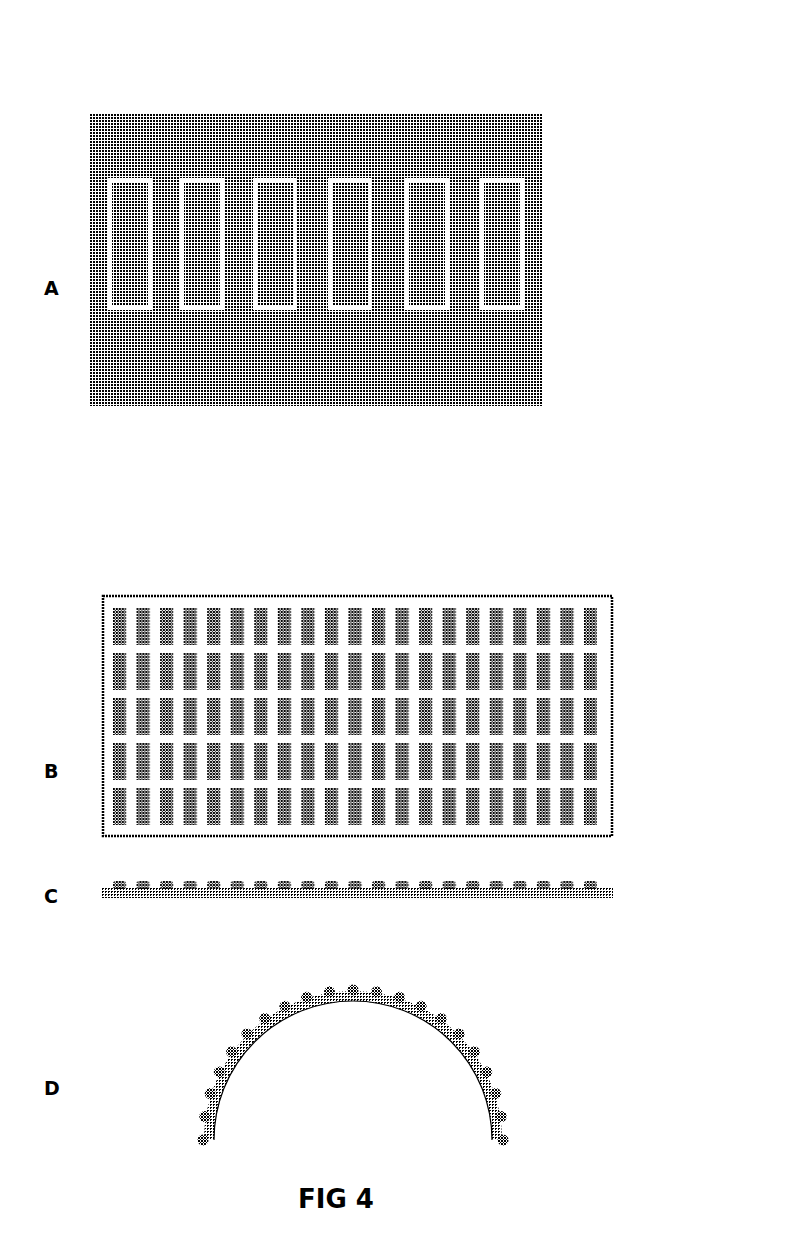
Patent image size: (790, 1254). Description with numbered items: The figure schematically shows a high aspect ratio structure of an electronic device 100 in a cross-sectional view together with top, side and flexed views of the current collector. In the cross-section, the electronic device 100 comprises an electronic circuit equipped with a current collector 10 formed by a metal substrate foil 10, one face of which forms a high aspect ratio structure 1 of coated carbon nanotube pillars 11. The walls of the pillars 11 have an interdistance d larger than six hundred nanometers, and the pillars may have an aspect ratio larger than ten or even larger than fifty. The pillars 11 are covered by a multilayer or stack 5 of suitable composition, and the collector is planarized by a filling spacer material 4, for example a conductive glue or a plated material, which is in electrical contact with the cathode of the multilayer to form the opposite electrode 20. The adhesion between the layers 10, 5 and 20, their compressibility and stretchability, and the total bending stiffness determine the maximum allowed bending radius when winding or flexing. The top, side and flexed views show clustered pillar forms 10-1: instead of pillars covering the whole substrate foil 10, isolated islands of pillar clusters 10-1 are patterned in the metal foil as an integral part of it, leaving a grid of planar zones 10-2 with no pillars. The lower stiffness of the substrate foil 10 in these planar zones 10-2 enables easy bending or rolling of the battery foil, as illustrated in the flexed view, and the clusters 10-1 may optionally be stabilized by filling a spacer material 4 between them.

The opposite electrode 20 is at (359, 177).
The filling spacer material 4 is at (531, 126).
The multilayer or stack 5 is at (532, 208).
The high aspect ratio structure 1 is at (512, 270).
The carbon nanotube pillars 11 is at (529, 287).
The current collector 10 is at (531, 365).
The electronic device 100 is at (359, 235).
The interdistance d is at (332, 241).
The planar zones 10-2 is at (474, 641).
The pillar clusters 10-1 is at (268, 1005).